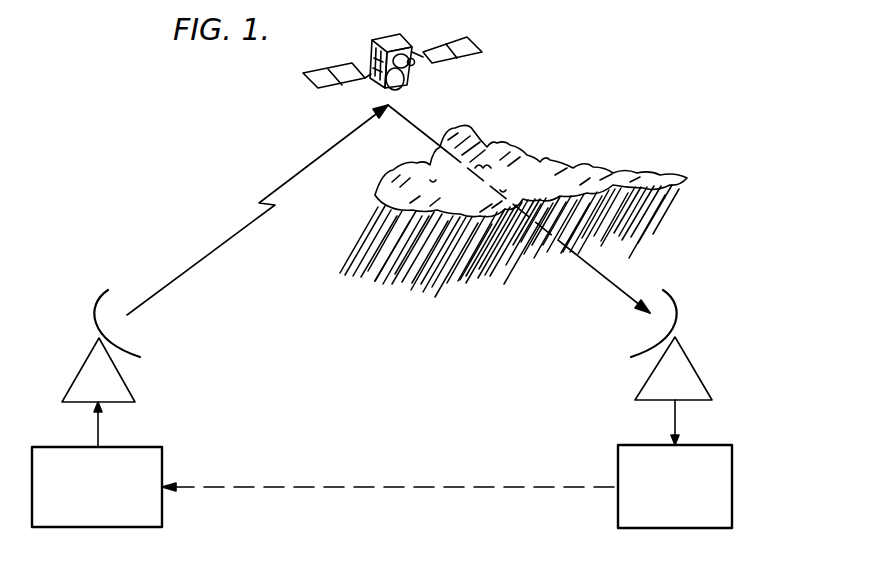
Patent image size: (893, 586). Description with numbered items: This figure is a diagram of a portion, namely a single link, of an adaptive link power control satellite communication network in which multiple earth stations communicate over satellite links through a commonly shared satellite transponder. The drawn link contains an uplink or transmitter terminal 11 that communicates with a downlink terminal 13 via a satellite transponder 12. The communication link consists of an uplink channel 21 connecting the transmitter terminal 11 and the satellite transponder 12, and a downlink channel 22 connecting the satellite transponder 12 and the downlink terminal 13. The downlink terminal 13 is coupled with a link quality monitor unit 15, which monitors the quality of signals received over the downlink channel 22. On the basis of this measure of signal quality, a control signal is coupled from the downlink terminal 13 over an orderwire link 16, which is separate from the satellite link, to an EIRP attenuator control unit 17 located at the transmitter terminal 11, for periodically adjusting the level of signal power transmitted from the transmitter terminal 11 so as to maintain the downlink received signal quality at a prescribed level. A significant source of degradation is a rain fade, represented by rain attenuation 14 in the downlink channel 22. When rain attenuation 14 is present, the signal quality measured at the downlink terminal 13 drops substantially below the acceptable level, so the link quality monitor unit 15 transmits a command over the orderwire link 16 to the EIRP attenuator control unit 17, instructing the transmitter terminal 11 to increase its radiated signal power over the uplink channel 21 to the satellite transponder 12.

The uplink or transmitter terminal 11 is at (126, 352).
The satellite transponder 12 is at (403, 37).
The downlink terminal 13 is at (680, 322).
The rain attenuation 14 is at (468, 130).
The link quality monitor unit 15 is at (732, 478).
The orderwire link 16 is at (395, 486).
The EIRP attenuator control unit 17 is at (133, 527).
The uplink channel 21 is at (243, 228).
The downlink channel 22 is at (592, 266).